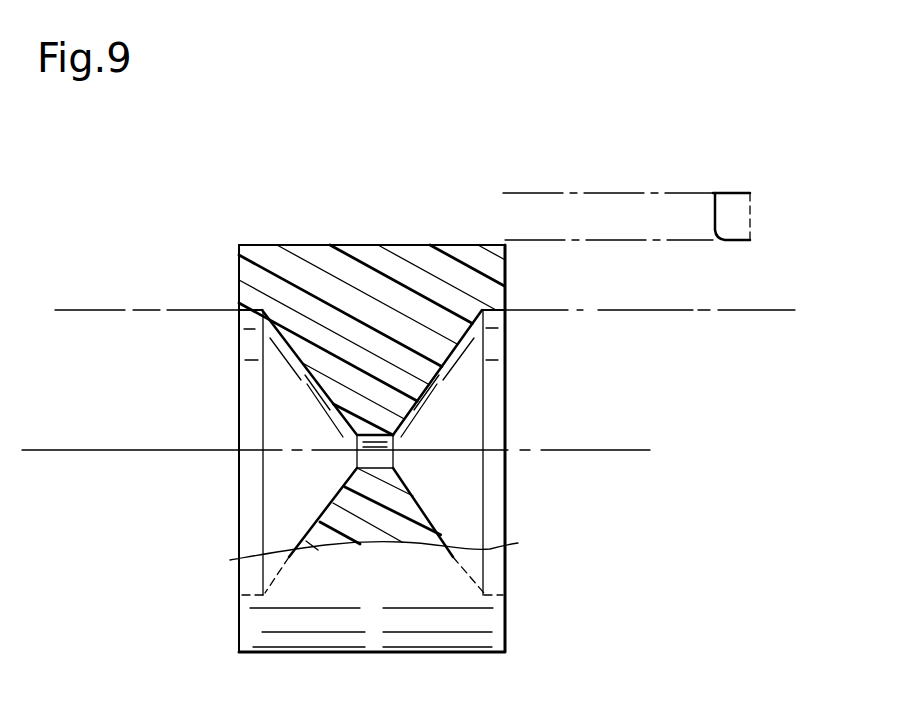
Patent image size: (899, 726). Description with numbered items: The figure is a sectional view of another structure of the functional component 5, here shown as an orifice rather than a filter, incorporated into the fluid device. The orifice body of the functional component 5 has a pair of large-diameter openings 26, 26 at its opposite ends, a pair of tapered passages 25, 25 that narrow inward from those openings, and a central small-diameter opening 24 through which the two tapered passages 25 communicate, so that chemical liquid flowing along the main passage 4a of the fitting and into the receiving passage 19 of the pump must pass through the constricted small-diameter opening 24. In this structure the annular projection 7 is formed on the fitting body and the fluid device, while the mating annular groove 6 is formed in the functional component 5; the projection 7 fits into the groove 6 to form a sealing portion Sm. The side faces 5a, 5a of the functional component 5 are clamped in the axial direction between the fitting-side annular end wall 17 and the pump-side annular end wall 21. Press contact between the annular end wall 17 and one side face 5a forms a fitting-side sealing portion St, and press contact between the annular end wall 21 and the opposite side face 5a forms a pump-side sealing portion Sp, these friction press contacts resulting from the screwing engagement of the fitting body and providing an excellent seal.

The functional component 5 is at (229, 633).
The side face 5a is at (238, 262).
The annular end wall 17 is at (240, 296).
The annular end wall 21 is at (477, 253).
The small-diameter opening 24 is at (378, 468).
The tapered passage 25 is at (318, 551).
The large-diameter opening 26 is at (258, 312).
The main passage 4a is at (116, 311).
The receiving passage 19 is at (727, 312).
The annular projection 7 is at (606, 199).
The annular groove 6 is at (720, 238).
The fitting-side sealing portion St is at (229, 294).
The sealing portion Sm is at (657, 250).
The pump-side sealing portion Sp is at (515, 300).